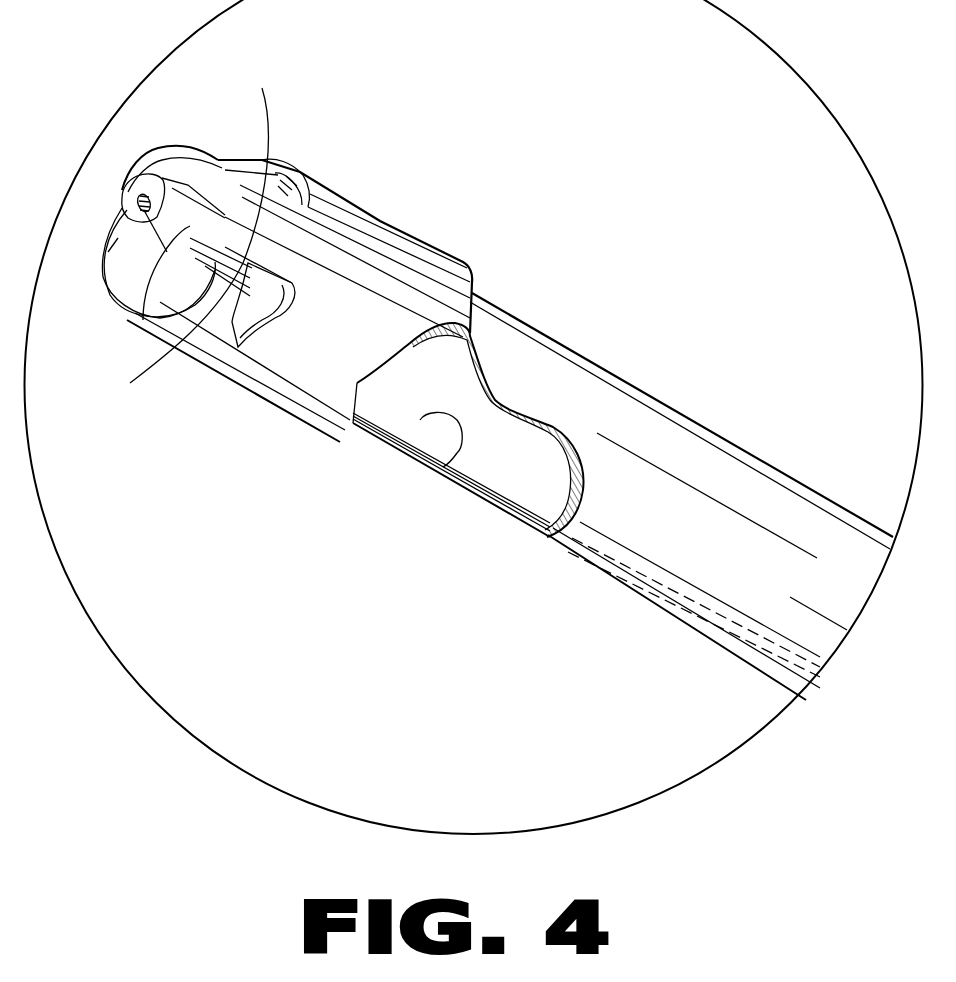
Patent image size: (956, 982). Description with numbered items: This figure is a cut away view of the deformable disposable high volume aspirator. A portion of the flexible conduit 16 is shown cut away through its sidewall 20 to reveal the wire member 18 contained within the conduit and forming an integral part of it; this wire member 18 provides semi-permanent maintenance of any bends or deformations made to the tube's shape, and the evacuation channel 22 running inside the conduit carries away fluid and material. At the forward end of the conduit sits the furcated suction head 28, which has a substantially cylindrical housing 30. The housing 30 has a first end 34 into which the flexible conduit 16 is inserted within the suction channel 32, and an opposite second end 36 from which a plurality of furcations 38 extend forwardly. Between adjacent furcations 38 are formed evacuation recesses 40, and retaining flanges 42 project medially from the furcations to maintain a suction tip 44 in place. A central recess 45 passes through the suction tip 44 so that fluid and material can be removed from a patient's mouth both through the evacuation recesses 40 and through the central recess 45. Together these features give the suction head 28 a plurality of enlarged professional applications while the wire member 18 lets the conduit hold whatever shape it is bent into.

The flexible conduit 16 is at (652, 413).
The wire member 18 is at (537, 507).
The sidewall of flexible conduit 20 is at (572, 518).
The evacuation channel 22 is at (452, 422).
The furcated suction head 28 is at (387, 222).
The housing of furcated suction head 30 is at (265, 372).
The suction channel 32 is at (277, 160).
The first end of furcated suction head 34 is at (333, 440).
The second end of furcated suction head 36 is at (137, 327).
The furcation 38 is at (231, 213).
The evacuation recess 40 is at (190, 168).
The retaining flange 42 is at (137, 277).
The suction tip 44 is at (122, 215).
The central recess of suction tip 45 is at (122, 208).